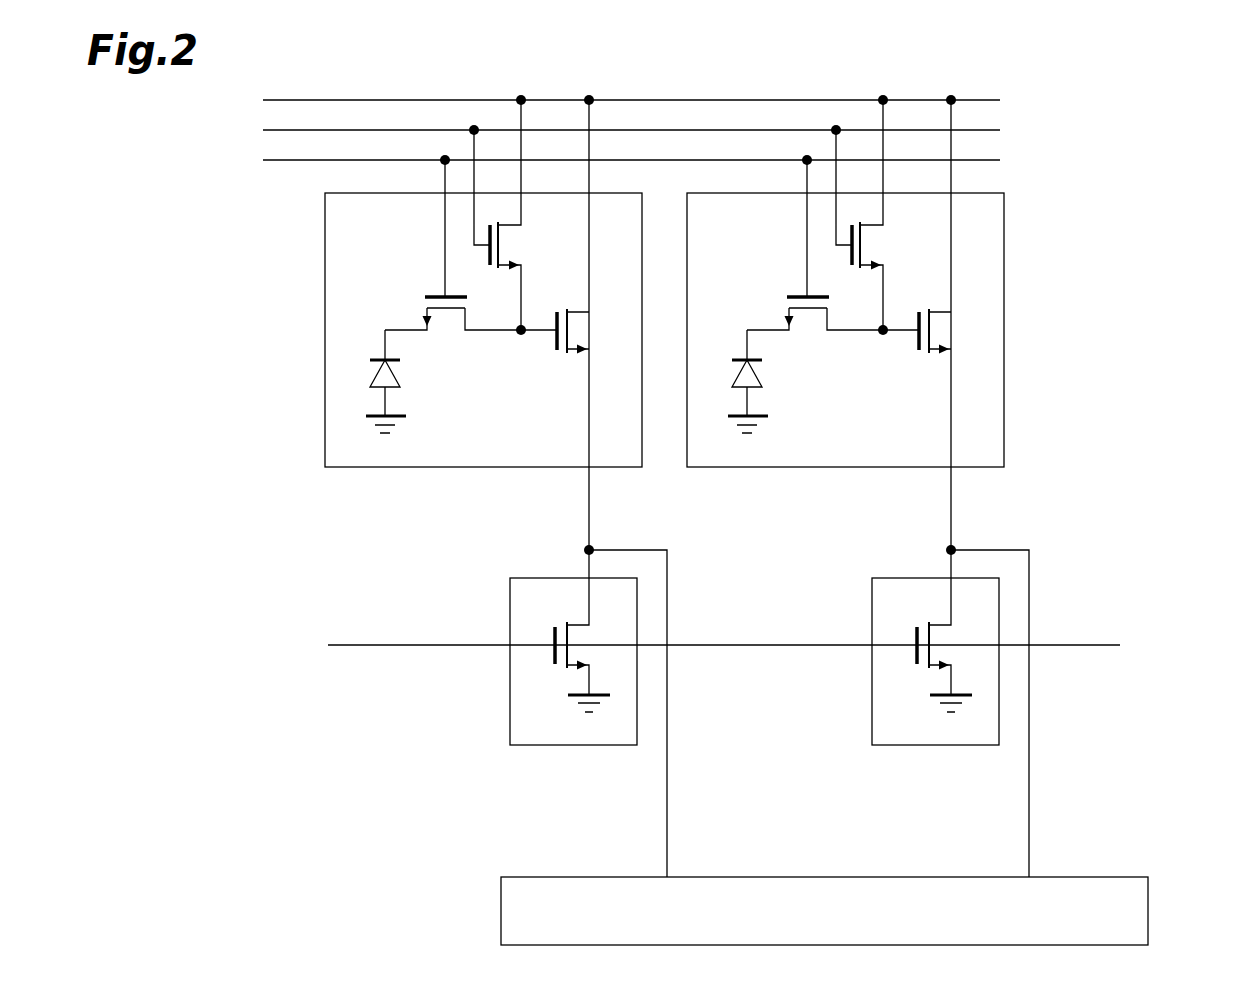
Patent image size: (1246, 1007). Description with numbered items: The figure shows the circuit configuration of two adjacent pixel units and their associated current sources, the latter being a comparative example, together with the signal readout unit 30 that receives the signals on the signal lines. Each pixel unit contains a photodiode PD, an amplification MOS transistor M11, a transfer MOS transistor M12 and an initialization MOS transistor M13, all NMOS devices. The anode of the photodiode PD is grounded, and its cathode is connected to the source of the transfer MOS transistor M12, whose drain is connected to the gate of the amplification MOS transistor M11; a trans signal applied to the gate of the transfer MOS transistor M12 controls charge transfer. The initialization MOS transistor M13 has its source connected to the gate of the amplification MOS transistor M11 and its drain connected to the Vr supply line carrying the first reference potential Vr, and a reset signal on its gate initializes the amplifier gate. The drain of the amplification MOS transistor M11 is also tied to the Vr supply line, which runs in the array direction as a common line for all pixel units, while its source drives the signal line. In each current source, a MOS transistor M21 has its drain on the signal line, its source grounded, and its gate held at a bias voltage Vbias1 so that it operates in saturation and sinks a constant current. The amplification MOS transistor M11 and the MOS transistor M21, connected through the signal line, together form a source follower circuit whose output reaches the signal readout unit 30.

The first reference potential Vr is at (599, 99).
The reset signal reset is at (599, 131).
The trans signal trans is at (599, 159).
The bias voltage Vbias1 is at (681, 644).
The amplification MOS transistor M11 is at (553, 348).
The transfer MOS transistor M12 is at (432, 293).
The initialization MOS transistor M13 is at (501, 254).
The photodiode PD is at (404, 378).
The MOS transistor M21 is at (577, 624).
The signal readout unit 30 is at (1148, 905).